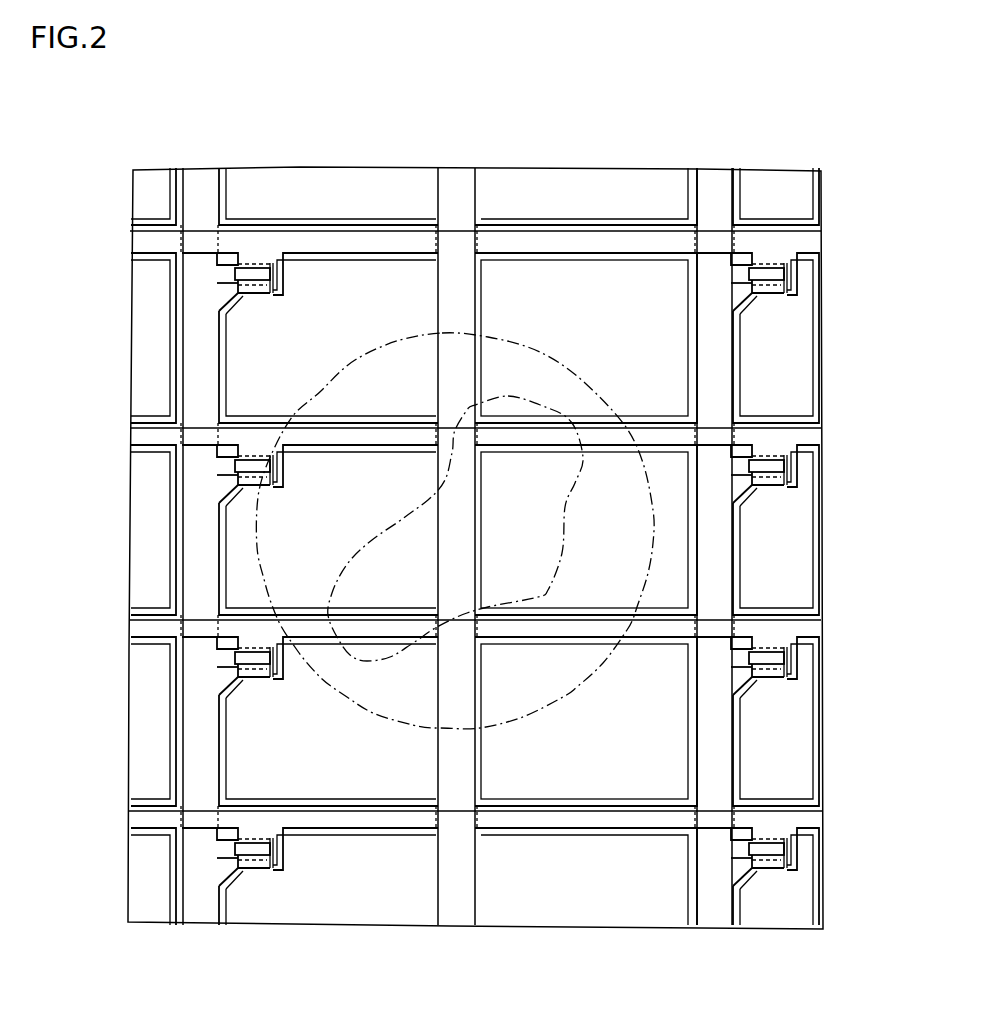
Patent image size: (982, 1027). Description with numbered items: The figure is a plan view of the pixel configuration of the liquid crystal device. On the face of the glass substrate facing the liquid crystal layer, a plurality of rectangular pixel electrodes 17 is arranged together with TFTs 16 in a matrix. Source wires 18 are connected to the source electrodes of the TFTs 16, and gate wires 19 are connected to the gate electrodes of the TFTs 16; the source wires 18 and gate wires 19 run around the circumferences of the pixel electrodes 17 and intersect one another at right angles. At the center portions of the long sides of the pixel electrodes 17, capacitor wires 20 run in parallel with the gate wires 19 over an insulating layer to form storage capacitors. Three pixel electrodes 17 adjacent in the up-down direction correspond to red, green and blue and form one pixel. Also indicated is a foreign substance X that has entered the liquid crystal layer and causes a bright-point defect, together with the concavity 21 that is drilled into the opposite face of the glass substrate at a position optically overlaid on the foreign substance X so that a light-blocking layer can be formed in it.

The TFT 16 is at (229, 262).
The pixel electrode 17 is at (353, 287).
The source wire 18 is at (584, 243).
The gate wire 19 is at (193, 190).
The capacitor wire 20 is at (456, 188).
The concavity 21 is at (350, 693).
The foreign substance X is at (396, 657).